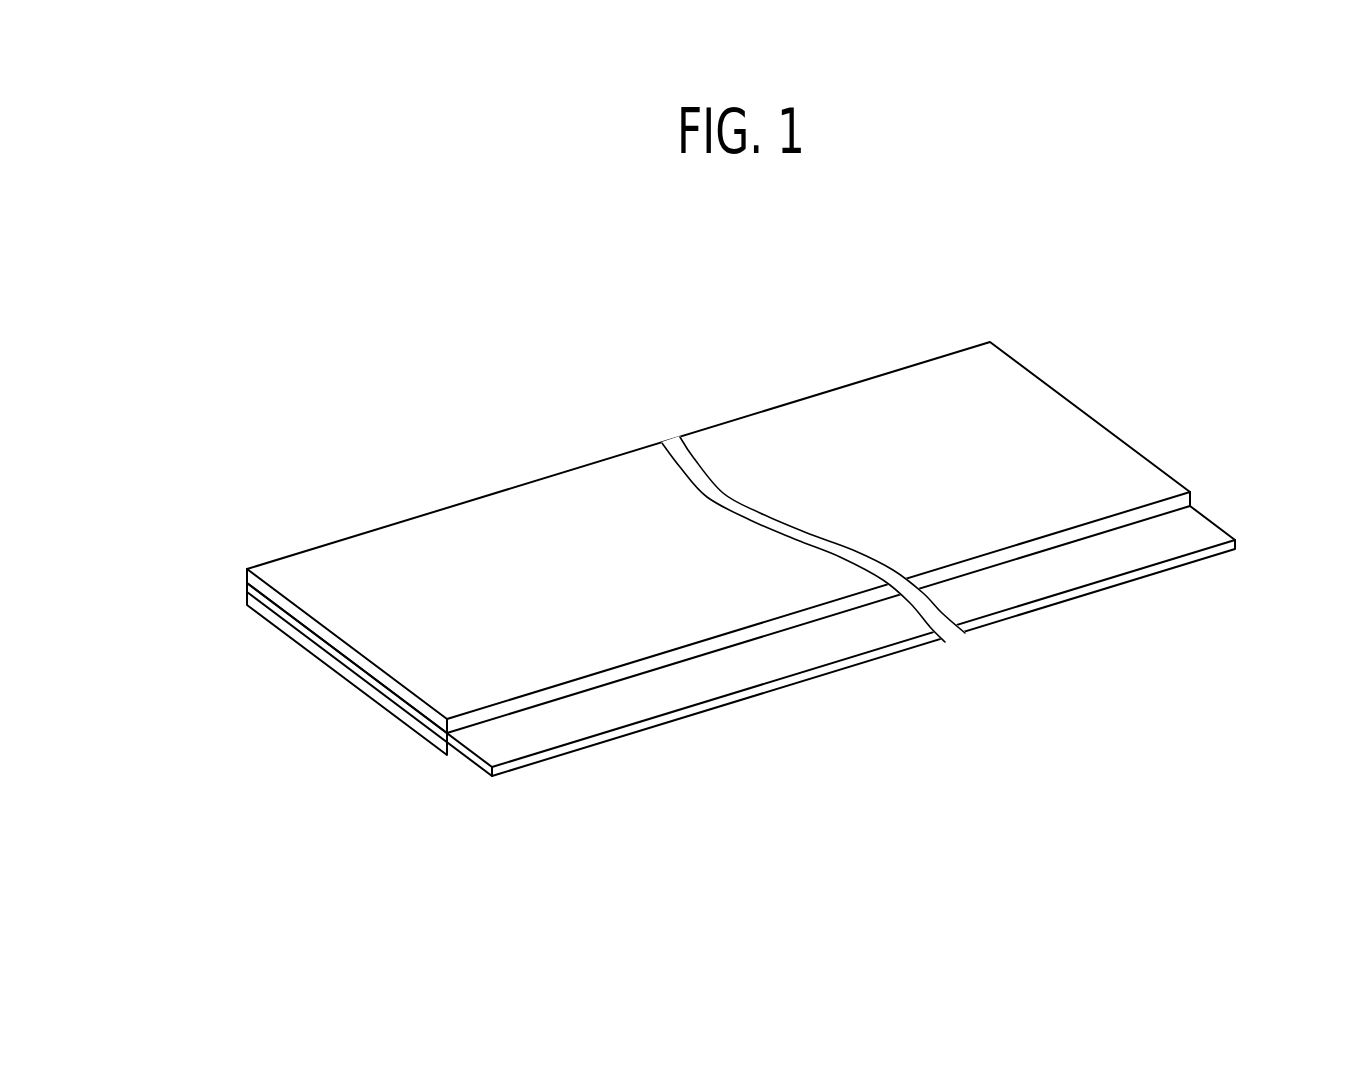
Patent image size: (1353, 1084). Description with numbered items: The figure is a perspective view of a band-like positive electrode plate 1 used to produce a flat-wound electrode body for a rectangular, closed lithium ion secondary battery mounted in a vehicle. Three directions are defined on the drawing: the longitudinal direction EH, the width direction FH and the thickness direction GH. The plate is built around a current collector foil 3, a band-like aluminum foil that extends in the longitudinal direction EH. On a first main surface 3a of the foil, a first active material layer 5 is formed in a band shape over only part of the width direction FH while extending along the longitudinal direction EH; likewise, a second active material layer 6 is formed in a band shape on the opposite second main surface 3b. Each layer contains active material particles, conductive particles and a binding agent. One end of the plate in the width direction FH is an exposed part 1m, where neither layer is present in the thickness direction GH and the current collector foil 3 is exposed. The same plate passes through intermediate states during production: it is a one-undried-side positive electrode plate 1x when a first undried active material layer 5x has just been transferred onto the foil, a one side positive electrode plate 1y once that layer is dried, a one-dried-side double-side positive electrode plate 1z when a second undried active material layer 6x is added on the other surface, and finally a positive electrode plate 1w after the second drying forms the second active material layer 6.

The positive electrode plate 1 is at (741, 591).
The one-undried-side positive electrode plate 1x is at (741, 591).
The one side positive electrode plate 1y is at (741, 591).
The one-dried-side double-side positive electrode plate 1z is at (741, 591).
The positive electrode plate 1w is at (741, 591).
The exposed part 1m is at (1075, 582).
The current collector foil 3 is at (741, 696).
The first main surface 3a is at (598, 720).
The second main surface 3b is at (548, 778).
The first active material layer 5 is at (718, 511).
The first undried active material layer 5x is at (827, 448).
The second active material layer 6 is at (393, 742).
The second undried active material layer 6x is at (422, 738).
The thickness direction GH is at (205, 550).
The width direction FH is at (335, 746).
The longitudinal direction EH is at (812, 756).